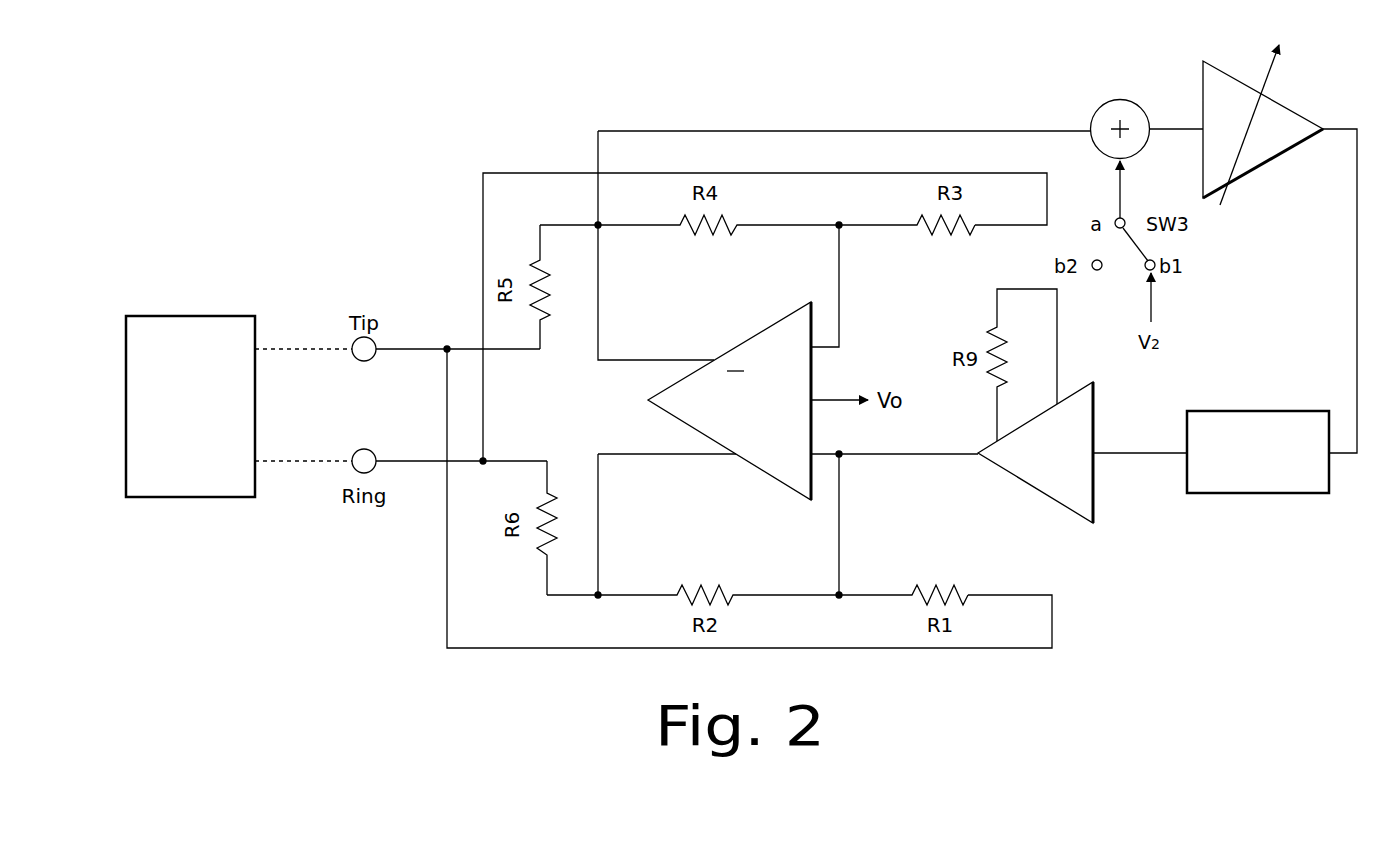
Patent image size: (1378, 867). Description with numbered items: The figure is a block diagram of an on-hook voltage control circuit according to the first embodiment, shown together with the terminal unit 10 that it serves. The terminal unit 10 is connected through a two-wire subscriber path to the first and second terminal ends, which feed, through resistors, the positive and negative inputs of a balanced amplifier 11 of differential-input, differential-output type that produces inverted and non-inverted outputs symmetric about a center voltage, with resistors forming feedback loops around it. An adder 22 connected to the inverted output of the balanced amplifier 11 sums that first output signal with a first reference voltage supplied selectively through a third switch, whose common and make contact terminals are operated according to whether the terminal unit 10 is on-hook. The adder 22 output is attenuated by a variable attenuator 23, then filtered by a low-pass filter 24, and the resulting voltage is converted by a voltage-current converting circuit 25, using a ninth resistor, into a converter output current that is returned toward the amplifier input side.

The terminal unit 10 is at (183, 316).
The balanced amplifier 11 is at (733, 350).
The adder 22 is at (1113, 100).
The variable attenuator 23 is at (1272, 160).
The low-pass filter 24 is at (1248, 493).
The voltage-current converting circuit 25 is at (1013, 478).